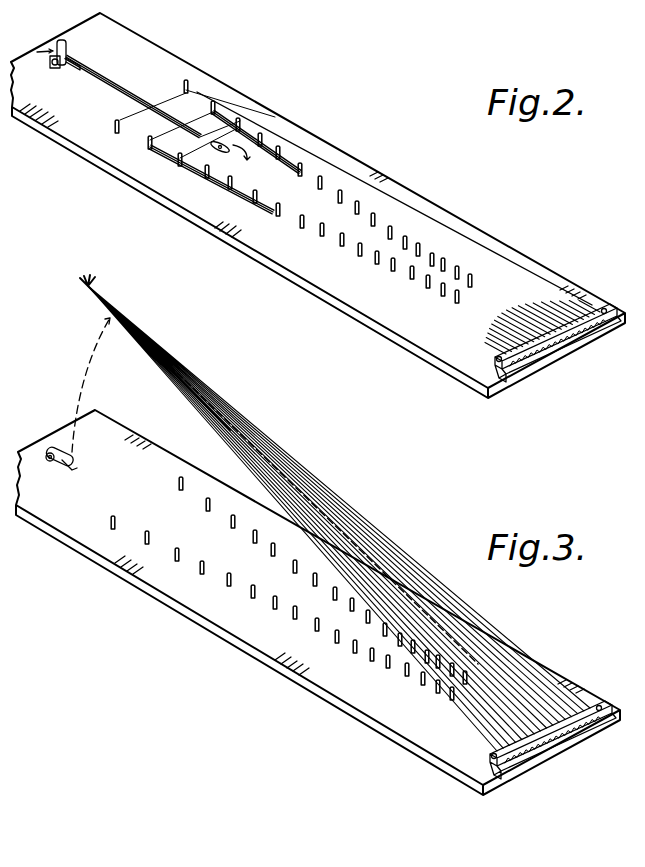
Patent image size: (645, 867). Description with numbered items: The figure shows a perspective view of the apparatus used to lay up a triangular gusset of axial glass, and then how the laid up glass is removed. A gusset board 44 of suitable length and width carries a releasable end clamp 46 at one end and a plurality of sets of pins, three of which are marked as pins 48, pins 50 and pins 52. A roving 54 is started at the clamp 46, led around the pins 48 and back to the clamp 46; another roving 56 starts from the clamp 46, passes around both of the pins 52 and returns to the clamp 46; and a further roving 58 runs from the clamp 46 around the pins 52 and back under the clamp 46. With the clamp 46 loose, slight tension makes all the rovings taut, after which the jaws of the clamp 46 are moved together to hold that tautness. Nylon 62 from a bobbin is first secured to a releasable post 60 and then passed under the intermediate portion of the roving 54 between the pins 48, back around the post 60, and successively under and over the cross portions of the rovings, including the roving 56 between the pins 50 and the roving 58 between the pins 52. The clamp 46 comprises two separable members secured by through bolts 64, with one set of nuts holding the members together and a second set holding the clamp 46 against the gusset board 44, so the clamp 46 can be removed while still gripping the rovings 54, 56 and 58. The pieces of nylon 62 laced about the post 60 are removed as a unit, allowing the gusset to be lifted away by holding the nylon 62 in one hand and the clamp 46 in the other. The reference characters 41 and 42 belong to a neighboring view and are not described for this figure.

In FIG. 3, the partial element of adjacent figure 41 is at (1, 413).
In FIG. 3, the partial element of adjacent figure 42 is at (0, 318).
In FIG. 2, the gusset board 44 is at (456, 358).
In FIG. 3, the gusset board 44 is at (233, 622).
In FIG. 2, the releasable end clamp 46 is at (578, 324).
In FIG. 3, the releasable end clamp 46 is at (583, 710).
In FIG. 2, the pins 48 is at (186, 84).
In FIG. 3, the pins 48 is at (177, 482).
In FIG. 2, the pins 50 is at (403, 245).
In FIG. 3, the pins 50 is at (400, 635).
In FIG. 2, the pins 52 is at (460, 284).
In FIG. 3, the pins 52 is at (463, 684).
In FIG. 2, the roving 54 is at (197, 92).
In FIG. 2, the roving 56 is at (420, 240).
In FIG. 2, the roving 58 is at (493, 302).
In FIG. 2, the releasable post 60 is at (66, 47).
In FIG. 3, the releasable post 60 is at (66, 470).
In FIG. 2, the nylon 62 is at (113, 86).
In FIG. 3, the nylon 62 is at (130, 323).
In FIG. 2, the through bolts 64 is at (602, 311).
In FIG. 3, the through bolts 64 is at (598, 707).